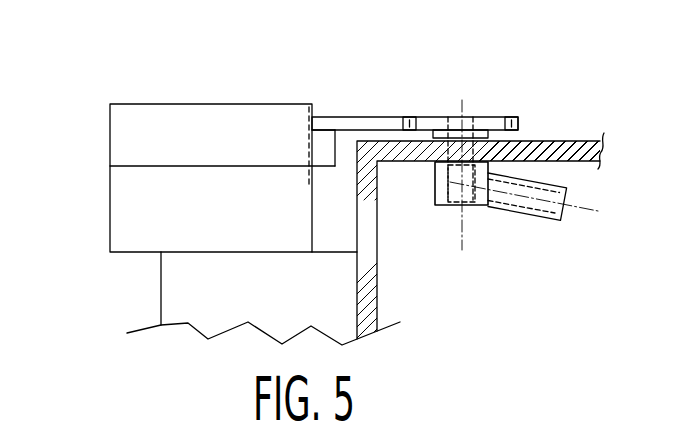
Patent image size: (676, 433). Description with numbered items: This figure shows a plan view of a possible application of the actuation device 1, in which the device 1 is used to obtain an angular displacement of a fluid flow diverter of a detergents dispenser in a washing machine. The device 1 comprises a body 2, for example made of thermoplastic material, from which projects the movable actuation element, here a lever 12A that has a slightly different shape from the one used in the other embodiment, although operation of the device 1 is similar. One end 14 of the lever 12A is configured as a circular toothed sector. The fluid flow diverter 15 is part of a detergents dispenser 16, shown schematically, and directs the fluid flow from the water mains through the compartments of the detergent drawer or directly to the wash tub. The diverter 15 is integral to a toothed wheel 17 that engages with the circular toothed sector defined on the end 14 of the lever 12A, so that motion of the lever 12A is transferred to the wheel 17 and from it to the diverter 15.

The device 1 is at (216, 180).
The body 2 is at (130, 112).
The lever 12A is at (344, 123).
The end of the lever 14 is at (413, 115).
The fluid flow diverter 15 is at (440, 207).
The detergents dispenser 16 is at (562, 142).
The toothed wheel 17 is at (490, 117).